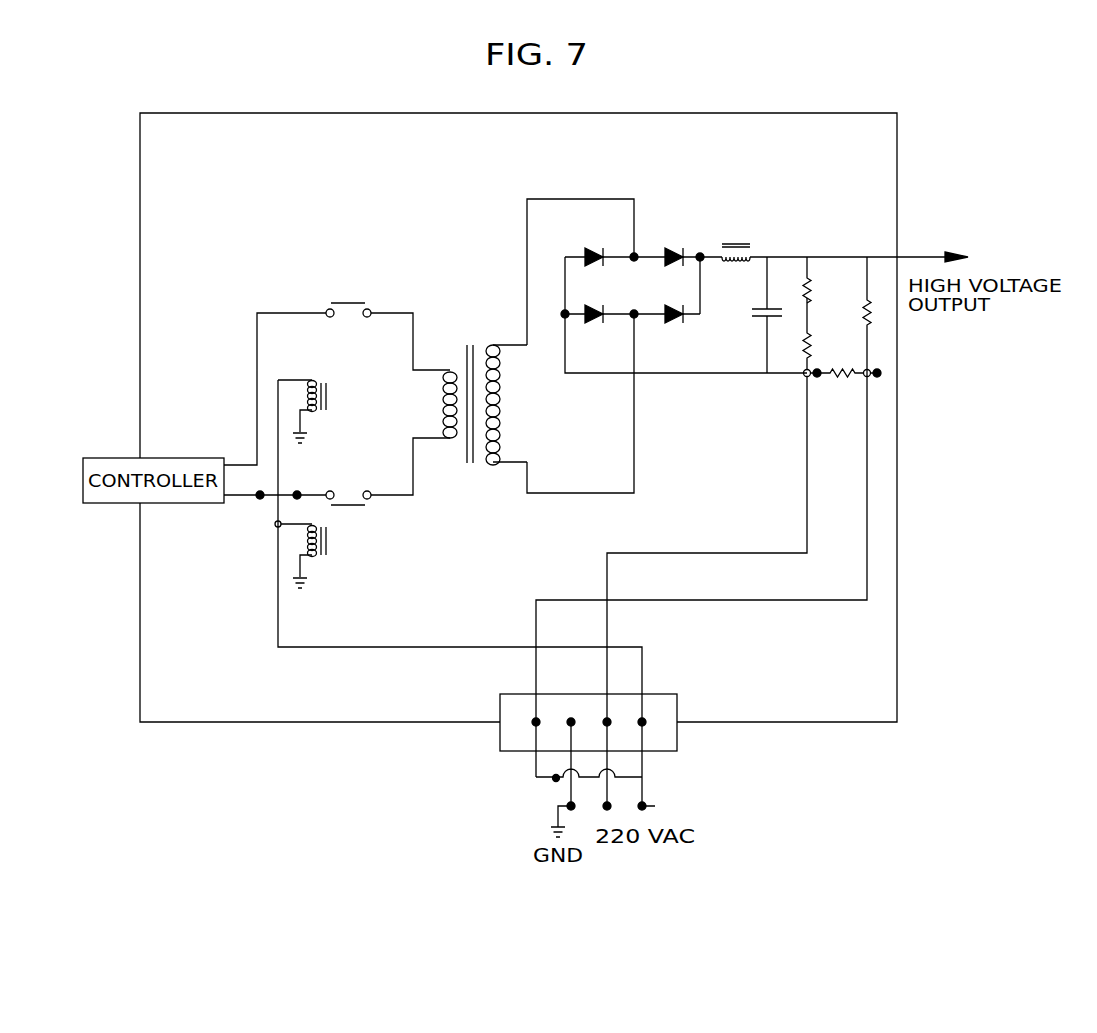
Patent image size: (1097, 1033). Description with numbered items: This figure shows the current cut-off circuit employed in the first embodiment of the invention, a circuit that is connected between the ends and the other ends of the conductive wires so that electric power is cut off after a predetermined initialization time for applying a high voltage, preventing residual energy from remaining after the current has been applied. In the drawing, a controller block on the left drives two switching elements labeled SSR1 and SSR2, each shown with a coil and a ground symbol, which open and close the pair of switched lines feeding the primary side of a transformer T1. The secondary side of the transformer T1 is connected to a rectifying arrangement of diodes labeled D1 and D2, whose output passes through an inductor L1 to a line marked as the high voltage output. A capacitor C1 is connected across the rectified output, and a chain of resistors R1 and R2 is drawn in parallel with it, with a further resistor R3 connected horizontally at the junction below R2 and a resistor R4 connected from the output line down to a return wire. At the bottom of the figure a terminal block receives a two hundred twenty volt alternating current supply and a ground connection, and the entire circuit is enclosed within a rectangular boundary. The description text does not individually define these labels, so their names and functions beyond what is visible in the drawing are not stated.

The solid state relay 1 SSR1 is at (336, 410).
The solid state relay 2 SSR2 is at (334, 554).
The transformer T1 is at (485, 423).
The diode 1 D1 is at (634, 267).
The diode 2 D2 is at (630, 304).
The inductor L1 is at (822, 238).
The capacitor C1 is at (761, 315).
The resistor 1 R1 is at (825, 280).
The resistor 2 R2 is at (825, 333).
The resistor 3 R3 is at (846, 384).
The resistor 4 R4 is at (734, 517).